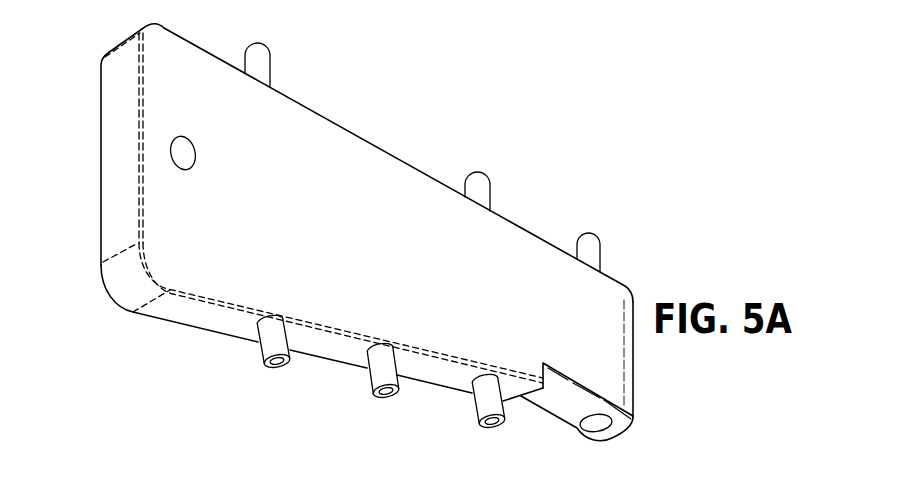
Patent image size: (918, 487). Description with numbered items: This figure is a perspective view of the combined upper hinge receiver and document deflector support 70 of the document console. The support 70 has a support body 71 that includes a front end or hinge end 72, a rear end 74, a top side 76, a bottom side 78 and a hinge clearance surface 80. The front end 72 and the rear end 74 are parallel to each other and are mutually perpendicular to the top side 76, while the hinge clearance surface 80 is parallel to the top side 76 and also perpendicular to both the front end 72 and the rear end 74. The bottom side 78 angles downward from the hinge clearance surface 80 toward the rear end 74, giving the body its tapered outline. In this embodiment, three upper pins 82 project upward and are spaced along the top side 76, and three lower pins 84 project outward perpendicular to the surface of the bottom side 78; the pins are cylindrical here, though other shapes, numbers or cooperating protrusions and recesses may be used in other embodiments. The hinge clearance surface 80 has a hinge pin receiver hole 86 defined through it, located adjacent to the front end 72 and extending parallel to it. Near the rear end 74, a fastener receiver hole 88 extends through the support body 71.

The upper hinge receiver and document deflector support 70 is at (602, 134).
The support body 71 is at (177, 81).
The front end 72 is at (637, 372).
The rear end 74 is at (120, 198).
The top side 76 is at (385, 151).
The bottom side 78 is at (213, 320).
The hinge clearance surface 80 is at (562, 398).
The upper pins 82 is at (262, 61).
The lower pins 84 is at (284, 337).
The hinge pin receiver hole 86 is at (597, 426).
The fastener receiver hole 88 is at (178, 152).